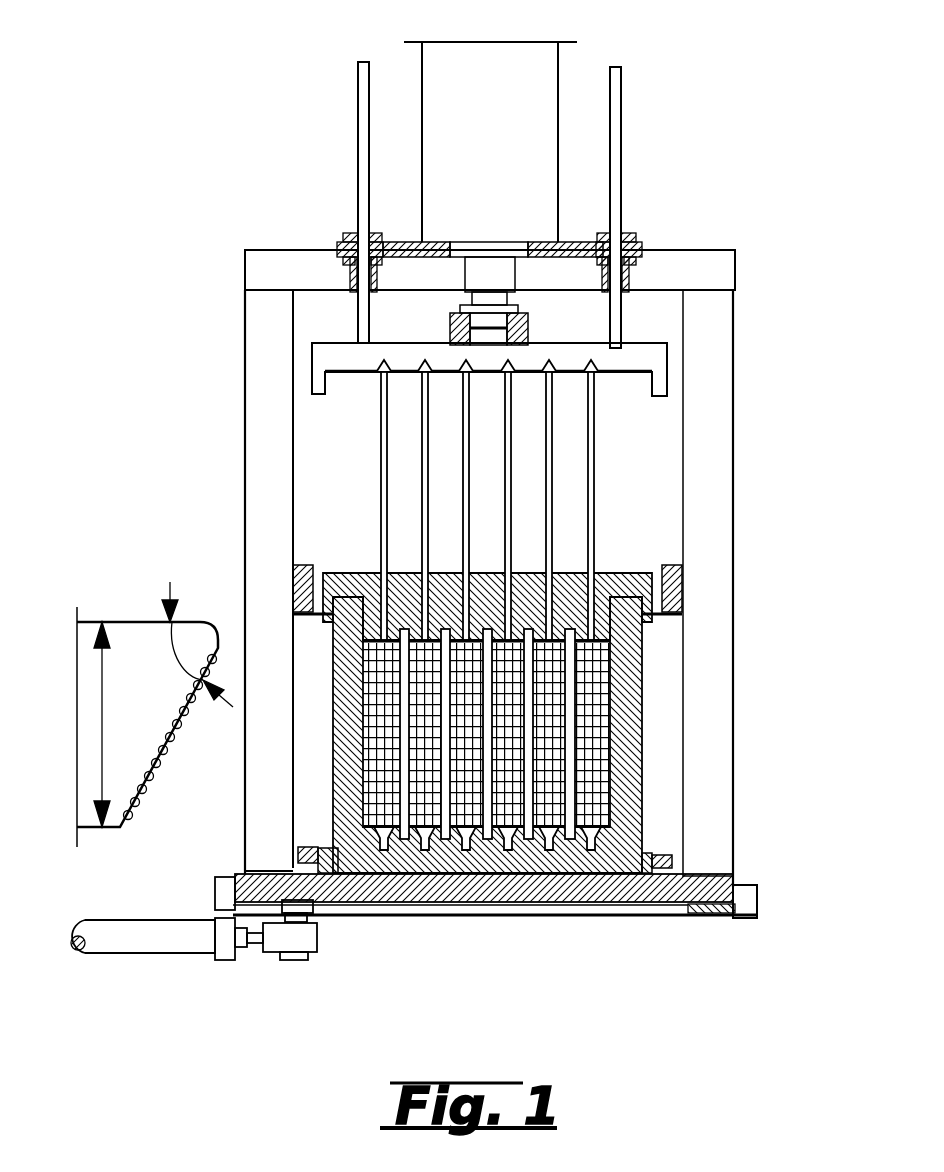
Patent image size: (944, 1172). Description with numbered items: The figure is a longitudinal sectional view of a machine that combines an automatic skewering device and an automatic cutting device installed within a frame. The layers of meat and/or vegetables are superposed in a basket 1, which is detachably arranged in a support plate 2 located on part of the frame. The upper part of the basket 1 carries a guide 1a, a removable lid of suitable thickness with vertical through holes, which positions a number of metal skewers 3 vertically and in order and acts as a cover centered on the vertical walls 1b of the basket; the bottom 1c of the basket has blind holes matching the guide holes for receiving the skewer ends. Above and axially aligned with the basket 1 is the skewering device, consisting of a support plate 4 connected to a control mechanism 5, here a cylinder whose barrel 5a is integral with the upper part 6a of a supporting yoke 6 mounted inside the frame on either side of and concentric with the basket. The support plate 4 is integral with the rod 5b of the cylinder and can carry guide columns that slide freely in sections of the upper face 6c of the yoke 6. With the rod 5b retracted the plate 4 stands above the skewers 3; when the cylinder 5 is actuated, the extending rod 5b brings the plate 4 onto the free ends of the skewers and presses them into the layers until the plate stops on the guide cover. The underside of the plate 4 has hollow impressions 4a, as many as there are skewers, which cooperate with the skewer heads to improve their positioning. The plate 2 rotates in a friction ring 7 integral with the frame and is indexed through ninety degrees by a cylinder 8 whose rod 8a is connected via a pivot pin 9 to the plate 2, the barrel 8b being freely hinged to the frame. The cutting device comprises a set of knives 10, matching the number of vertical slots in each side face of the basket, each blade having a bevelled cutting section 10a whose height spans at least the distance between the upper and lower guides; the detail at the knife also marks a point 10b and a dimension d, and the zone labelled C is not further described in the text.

The basket 1 is at (670, 698).
The guide 1a is at (598, 577).
The vertical walls 1b is at (643, 730).
The bottom 1c is at (302, 847).
The support plate 2 is at (427, 893).
The metal skewers 3 is at (553, 510).
The support plate 4 is at (488, 407).
The hollow impressions 4a is at (357, 360).
The control mechanism 5 is at (585, 148).
The barrel 5a is at (623, 87).
The rod 5b is at (502, 272).
The supporting yoke 6 is at (431, 518).
The upper part 6a is at (672, 265).
The upper face 6c is at (290, 250).
The friction ring 7 is at (478, 518).
The cylinder 8 is at (194, 973).
The rod 8a is at (242, 952).
The barrel 8b is at (170, 948).
The pivot pin 9 is at (315, 915).
The knives 10 is at (155, 682).
The cutting section 10a is at (157, 777).
The upper end of inclined member 10b is at (147, 620).
The chamber C is at (257, 428).
The dimension d is at (163, 724).